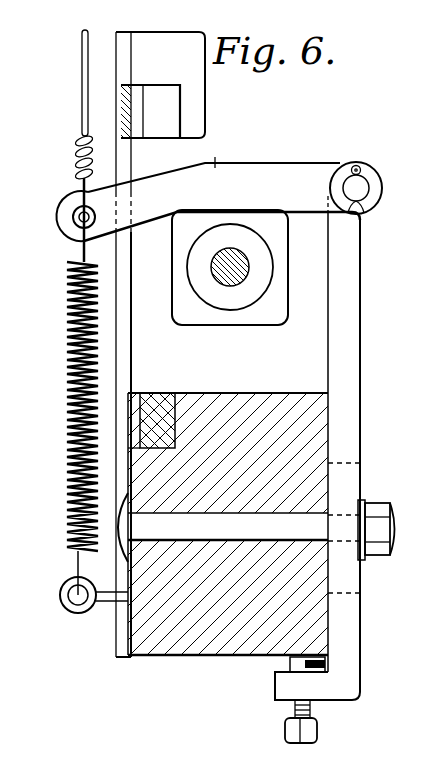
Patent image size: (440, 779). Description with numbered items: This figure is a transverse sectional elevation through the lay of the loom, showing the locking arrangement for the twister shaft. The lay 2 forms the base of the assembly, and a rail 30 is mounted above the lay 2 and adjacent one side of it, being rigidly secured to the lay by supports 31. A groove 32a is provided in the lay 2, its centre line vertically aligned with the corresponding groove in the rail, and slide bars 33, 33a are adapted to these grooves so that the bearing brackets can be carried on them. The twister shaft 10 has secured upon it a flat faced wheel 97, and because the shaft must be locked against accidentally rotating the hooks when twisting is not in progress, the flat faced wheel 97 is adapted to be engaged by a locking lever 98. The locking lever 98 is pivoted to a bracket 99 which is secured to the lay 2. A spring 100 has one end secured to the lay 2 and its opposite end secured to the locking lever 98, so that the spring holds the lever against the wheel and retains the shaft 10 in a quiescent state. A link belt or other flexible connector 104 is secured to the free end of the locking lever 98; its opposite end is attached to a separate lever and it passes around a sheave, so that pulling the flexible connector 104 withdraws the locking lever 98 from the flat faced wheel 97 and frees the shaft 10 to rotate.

The lay 2 is at (307, 427).
The twister shaft 10 is at (233, 275).
The rail 30 is at (153, 35).
The support 31 is at (118, 355).
The groove 32a is at (148, 449).
The slide bar 33 is at (163, 107).
The slide bar 33a is at (166, 390).
The flat faced wheel 97 is at (278, 237).
The locking lever 98 is at (260, 175).
The bracket 99 is at (340, 272).
The spring 100 is at (68, 352).
The flexible connector 104 is at (80, 101).